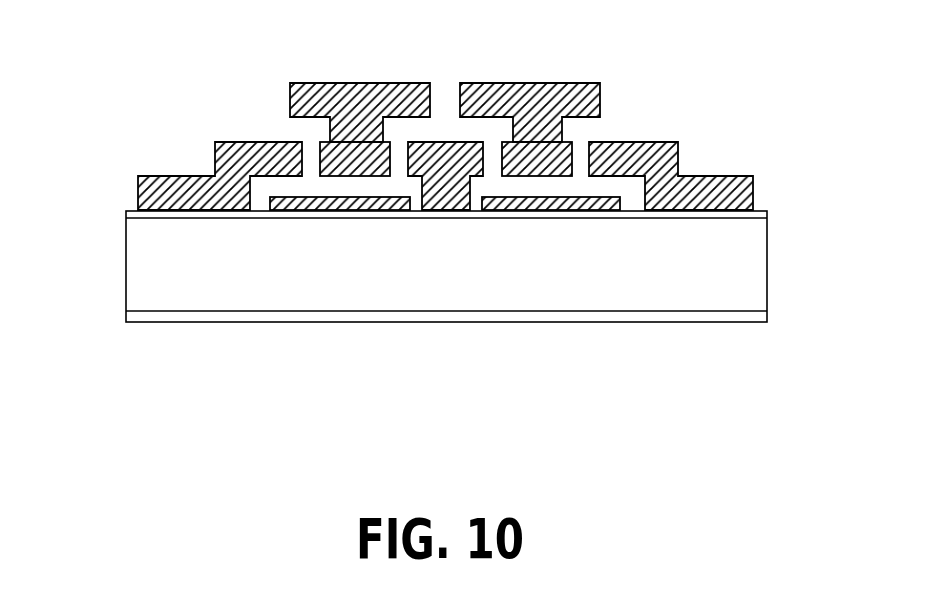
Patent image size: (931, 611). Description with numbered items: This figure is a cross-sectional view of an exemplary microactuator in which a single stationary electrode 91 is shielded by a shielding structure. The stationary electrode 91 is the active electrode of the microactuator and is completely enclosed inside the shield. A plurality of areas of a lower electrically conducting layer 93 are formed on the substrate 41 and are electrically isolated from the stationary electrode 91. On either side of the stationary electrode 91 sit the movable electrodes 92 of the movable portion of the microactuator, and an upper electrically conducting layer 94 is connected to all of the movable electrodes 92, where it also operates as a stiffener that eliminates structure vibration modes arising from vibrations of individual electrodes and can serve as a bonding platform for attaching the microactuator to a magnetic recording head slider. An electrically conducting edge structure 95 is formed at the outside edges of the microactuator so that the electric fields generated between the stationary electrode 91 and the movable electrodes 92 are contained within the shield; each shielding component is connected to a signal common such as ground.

The substrate 41 is at (745, 255).
The stationary electrode 91 is at (437, 192).
The movable electrode 92 is at (326, 146).
The lower electrically conducting layer 93 is at (312, 198).
The upper electrically conducting layer 94 is at (327, 95).
The electrically conducting edge structure 95 is at (138, 195).